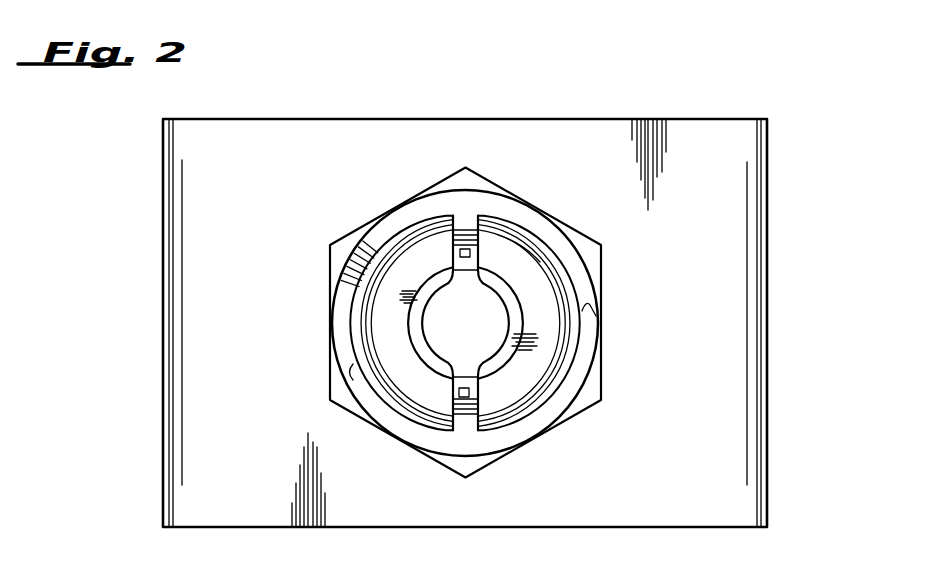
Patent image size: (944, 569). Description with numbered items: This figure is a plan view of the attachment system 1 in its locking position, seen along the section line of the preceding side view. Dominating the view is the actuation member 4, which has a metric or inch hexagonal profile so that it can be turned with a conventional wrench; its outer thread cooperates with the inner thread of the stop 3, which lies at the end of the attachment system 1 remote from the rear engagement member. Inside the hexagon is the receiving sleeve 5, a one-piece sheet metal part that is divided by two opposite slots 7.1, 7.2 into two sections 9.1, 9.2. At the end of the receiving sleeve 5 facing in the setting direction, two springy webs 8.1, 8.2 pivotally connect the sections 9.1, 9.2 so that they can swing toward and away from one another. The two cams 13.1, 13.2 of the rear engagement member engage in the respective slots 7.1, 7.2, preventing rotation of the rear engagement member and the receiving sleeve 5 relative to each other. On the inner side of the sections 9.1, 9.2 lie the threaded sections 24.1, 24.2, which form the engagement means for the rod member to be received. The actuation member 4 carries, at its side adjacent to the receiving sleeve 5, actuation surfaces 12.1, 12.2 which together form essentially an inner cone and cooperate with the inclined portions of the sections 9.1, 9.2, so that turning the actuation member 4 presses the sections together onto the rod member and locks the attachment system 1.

The attachment system 1 is at (695, 84).
The stop 3 is at (731, 364).
The actuation member 4 is at (603, 263).
The receiving sleeve 5 is at (356, 300).
The slot 7.1 is at (466, 224).
The slot 7.2 is at (464, 427).
The springy web 8.1 is at (452, 235).
The springy web 8.2 is at (478, 403).
The section of the receiving sleeve 9.1 is at (414, 385).
The section of the receiving sleeve 9.2 is at (546, 343).
The actuation surface 12.1 is at (351, 368).
The actuation surface 12.2 is at (597, 305).
The cam 13.1 is at (455, 253).
The cam 13.2 is at (478, 393).
The threaded section 24.1 is at (420, 330).
The threaded section 24.2 is at (505, 290).